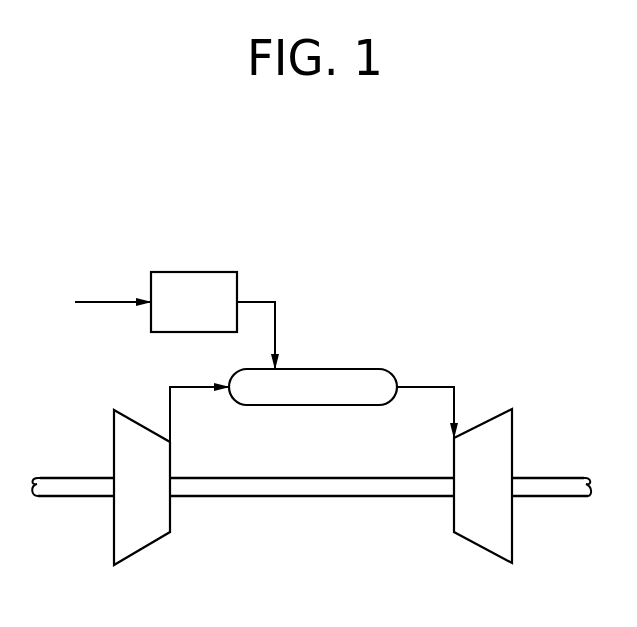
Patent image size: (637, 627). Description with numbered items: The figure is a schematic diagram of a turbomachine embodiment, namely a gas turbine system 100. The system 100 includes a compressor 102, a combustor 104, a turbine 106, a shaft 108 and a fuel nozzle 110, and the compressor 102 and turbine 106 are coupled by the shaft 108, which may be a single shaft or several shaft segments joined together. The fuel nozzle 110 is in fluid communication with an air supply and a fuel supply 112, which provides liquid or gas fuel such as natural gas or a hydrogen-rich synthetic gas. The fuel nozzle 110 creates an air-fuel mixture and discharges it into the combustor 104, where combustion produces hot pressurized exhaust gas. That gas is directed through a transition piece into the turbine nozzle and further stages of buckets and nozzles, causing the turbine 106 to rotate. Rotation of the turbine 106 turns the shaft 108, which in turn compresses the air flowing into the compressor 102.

The gas turbine system 100 is at (386, 241).
The compressor 102 is at (114, 438).
The combustor 104 is at (346, 369).
The turbine 106 is at (513, 448).
The shaft 108 is at (306, 497).
The fuel nozzle 110 is at (203, 272).
The fuel supply 112 is at (102, 300).